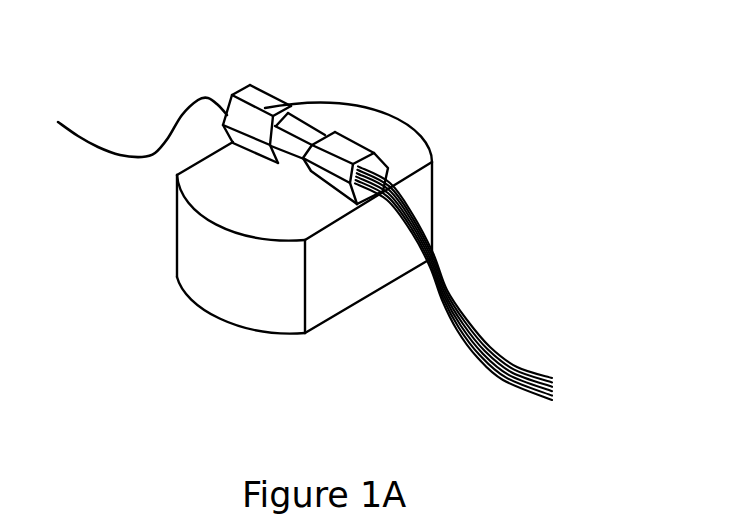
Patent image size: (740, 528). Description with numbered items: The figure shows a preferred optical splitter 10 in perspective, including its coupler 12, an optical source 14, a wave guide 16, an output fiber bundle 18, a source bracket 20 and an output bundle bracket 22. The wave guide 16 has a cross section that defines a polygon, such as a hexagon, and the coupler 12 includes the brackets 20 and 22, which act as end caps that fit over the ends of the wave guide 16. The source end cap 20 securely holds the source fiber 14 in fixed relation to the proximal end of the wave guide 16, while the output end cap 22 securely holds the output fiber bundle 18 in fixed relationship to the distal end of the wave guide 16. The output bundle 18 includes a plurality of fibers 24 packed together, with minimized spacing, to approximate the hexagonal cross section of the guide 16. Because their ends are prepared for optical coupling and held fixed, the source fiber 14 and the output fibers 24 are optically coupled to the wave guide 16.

The optical splitter 10 is at (344, 241).
The coupler 12 is at (340, 100).
The optical source 14 is at (102, 152).
The wave guide 16 is at (288, 157).
The output fiber bundle 18 is at (436, 316).
The source bracket 20 is at (272, 93).
The output bundle bracket 22 is at (353, 151).
The fibers 24 is at (555, 380).